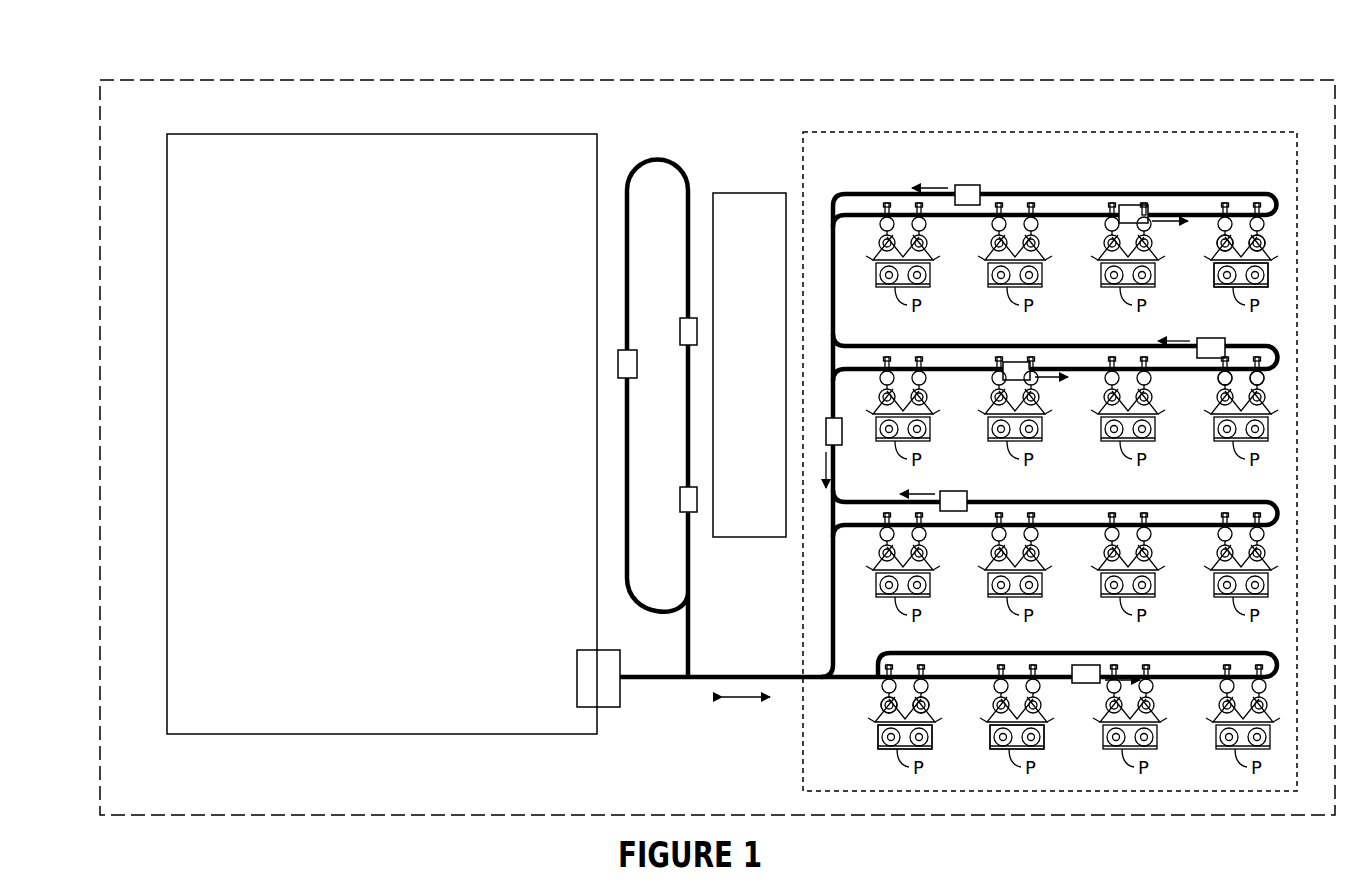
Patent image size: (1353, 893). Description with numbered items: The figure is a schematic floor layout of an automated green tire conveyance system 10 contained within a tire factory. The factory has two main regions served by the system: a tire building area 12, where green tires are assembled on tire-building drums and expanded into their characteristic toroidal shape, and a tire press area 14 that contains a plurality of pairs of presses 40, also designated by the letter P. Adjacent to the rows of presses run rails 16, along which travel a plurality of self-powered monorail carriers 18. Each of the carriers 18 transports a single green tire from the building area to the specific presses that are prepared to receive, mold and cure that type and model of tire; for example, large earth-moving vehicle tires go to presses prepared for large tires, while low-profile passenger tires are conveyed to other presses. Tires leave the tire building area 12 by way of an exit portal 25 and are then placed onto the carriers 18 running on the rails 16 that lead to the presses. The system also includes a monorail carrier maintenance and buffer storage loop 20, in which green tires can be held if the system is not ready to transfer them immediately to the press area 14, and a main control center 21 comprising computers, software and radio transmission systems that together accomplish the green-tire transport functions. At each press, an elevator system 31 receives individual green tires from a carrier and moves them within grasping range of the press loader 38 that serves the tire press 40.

The green tire conveyance system 10 is at (684, 52).
The tire building area 12 is at (405, 718).
The tire press area 14 is at (1055, 130).
The rails 16 is at (1060, 192).
The monorail carriers 18 is at (684, 332).
The buffer storage loop 20 is at (661, 207).
The main control center 21 is at (733, 528).
The exit portal 25 is at (607, 698).
The elevator system 31 is at (1264, 372).
The press loader 38 is at (1234, 230).
The presses 40 is at (1273, 275).